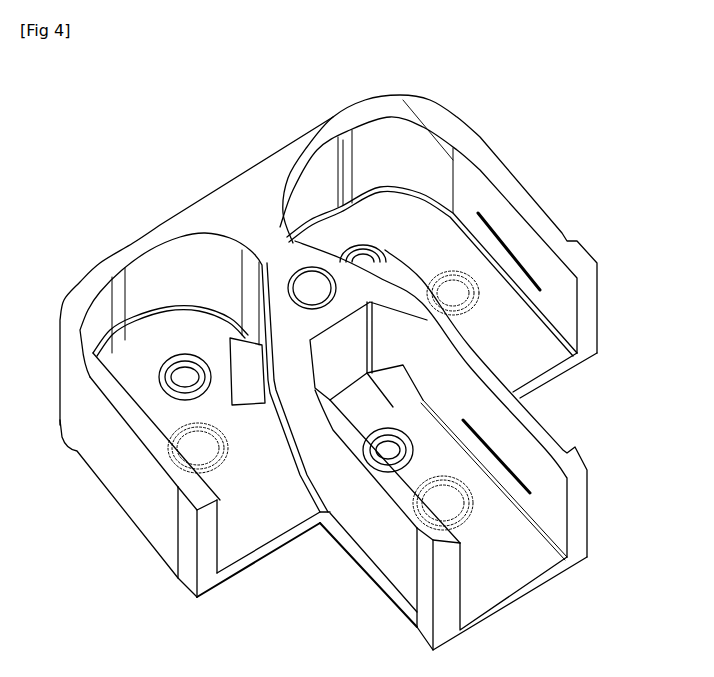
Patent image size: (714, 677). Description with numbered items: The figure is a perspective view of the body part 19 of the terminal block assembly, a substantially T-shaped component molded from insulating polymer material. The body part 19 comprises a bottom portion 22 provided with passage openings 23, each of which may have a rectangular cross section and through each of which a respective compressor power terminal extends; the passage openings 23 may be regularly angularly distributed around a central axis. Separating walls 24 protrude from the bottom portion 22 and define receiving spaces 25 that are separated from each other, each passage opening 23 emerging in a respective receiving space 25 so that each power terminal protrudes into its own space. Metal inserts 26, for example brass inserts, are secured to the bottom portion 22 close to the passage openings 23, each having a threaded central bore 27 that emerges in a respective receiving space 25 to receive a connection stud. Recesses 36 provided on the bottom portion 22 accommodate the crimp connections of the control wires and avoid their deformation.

The body part 19 is at (530, 171).
The bottom portion 22 is at (540, 355).
The passage opening 23 is at (350, 405).
The separating wall 24 is at (550, 270).
The receiving space 25 is at (406, 185).
The metal insert 26 is at (358, 252).
The central bore 27 is at (372, 247).
The recess 36 is at (460, 293).